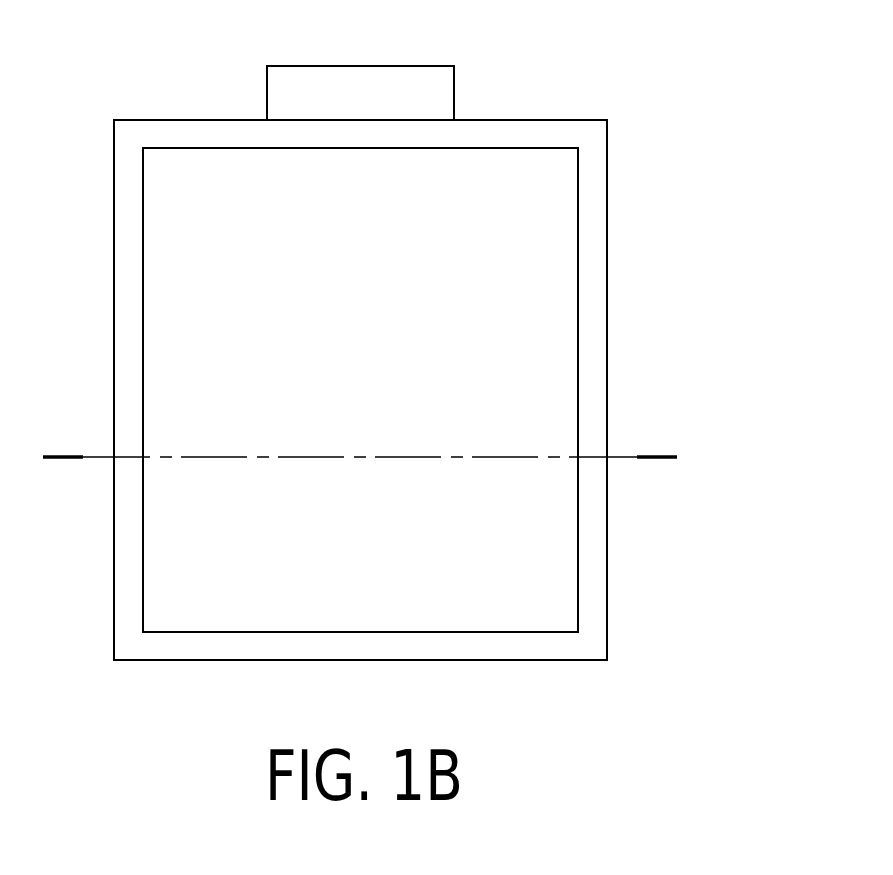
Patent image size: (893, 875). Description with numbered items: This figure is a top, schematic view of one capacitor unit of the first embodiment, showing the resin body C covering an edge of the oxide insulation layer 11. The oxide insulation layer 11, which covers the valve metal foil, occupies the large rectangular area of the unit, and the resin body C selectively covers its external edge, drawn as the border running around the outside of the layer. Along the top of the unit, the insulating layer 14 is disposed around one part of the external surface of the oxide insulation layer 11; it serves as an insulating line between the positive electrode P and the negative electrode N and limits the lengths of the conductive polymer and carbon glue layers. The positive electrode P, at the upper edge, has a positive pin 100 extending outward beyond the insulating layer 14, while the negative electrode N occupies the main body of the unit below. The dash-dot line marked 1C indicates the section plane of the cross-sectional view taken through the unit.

The positive pin 100 is at (437, 91).
The insulating layer 14 is at (601, 136).
The oxide insulation layer 11 is at (557, 292).
The positive electrode P is at (275, 90).
The negative electrode N is at (171, 292).
The resin body C is at (603, 406).
The section line 1C- 1C is at (63, 461).